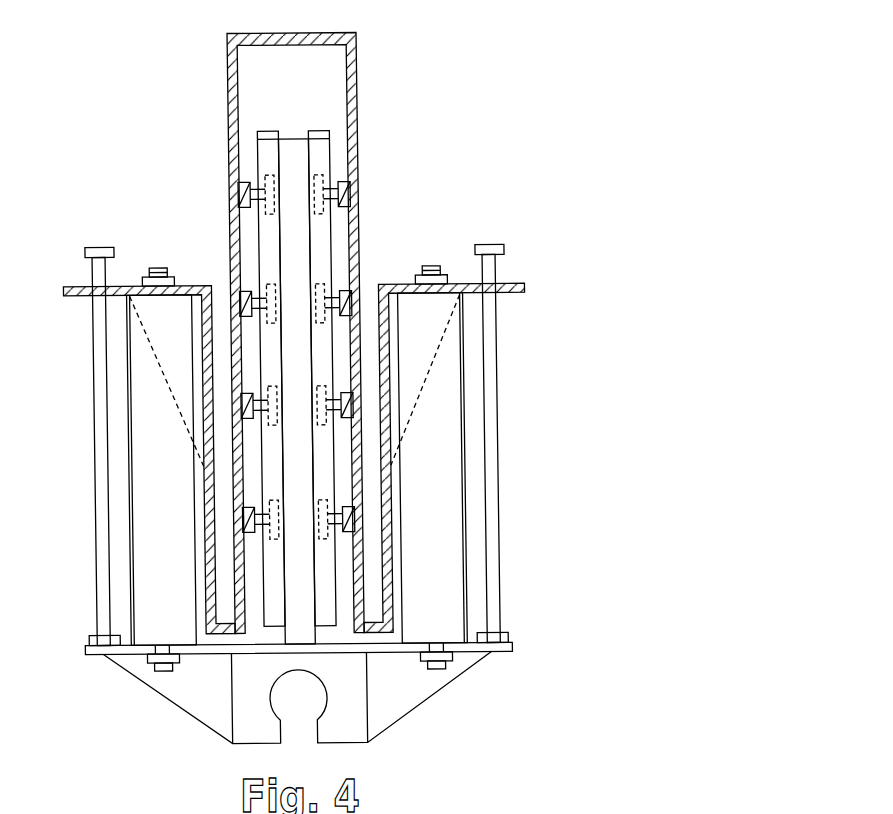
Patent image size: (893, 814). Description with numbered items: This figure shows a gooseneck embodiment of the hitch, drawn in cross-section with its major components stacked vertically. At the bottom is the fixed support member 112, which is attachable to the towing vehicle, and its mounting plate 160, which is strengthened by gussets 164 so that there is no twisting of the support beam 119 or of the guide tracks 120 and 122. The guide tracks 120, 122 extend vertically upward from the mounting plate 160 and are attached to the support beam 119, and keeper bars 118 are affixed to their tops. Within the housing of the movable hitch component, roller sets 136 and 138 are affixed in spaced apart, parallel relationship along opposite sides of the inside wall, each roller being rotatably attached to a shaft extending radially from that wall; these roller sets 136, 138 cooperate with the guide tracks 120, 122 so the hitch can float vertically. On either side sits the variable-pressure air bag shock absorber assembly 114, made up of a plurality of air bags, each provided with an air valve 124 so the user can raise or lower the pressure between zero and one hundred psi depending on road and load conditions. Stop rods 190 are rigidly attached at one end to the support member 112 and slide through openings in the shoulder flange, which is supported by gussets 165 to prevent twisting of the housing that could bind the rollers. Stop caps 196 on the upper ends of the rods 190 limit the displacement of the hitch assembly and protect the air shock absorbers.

The fixed support member 112 is at (452, 699).
The variable-pressure air bag shock absorber assembly 114 is at (132, 468).
The keeper bars 118 is at (264, 130).
The support beam 119 is at (294, 138).
The guide track 120 is at (260, 232).
The guide track 122 is at (333, 248).
The air valve 124 is at (160, 265).
The roller set 136 is at (321, 172).
The roller set 138 is at (272, 284).
The mounting plate 160 is at (464, 654).
The gussets 164 is at (399, 693).
The gussets 165 is at (428, 369).
The stop rods 190 is at (93, 408).
The stop caps 196 is at (99, 246).